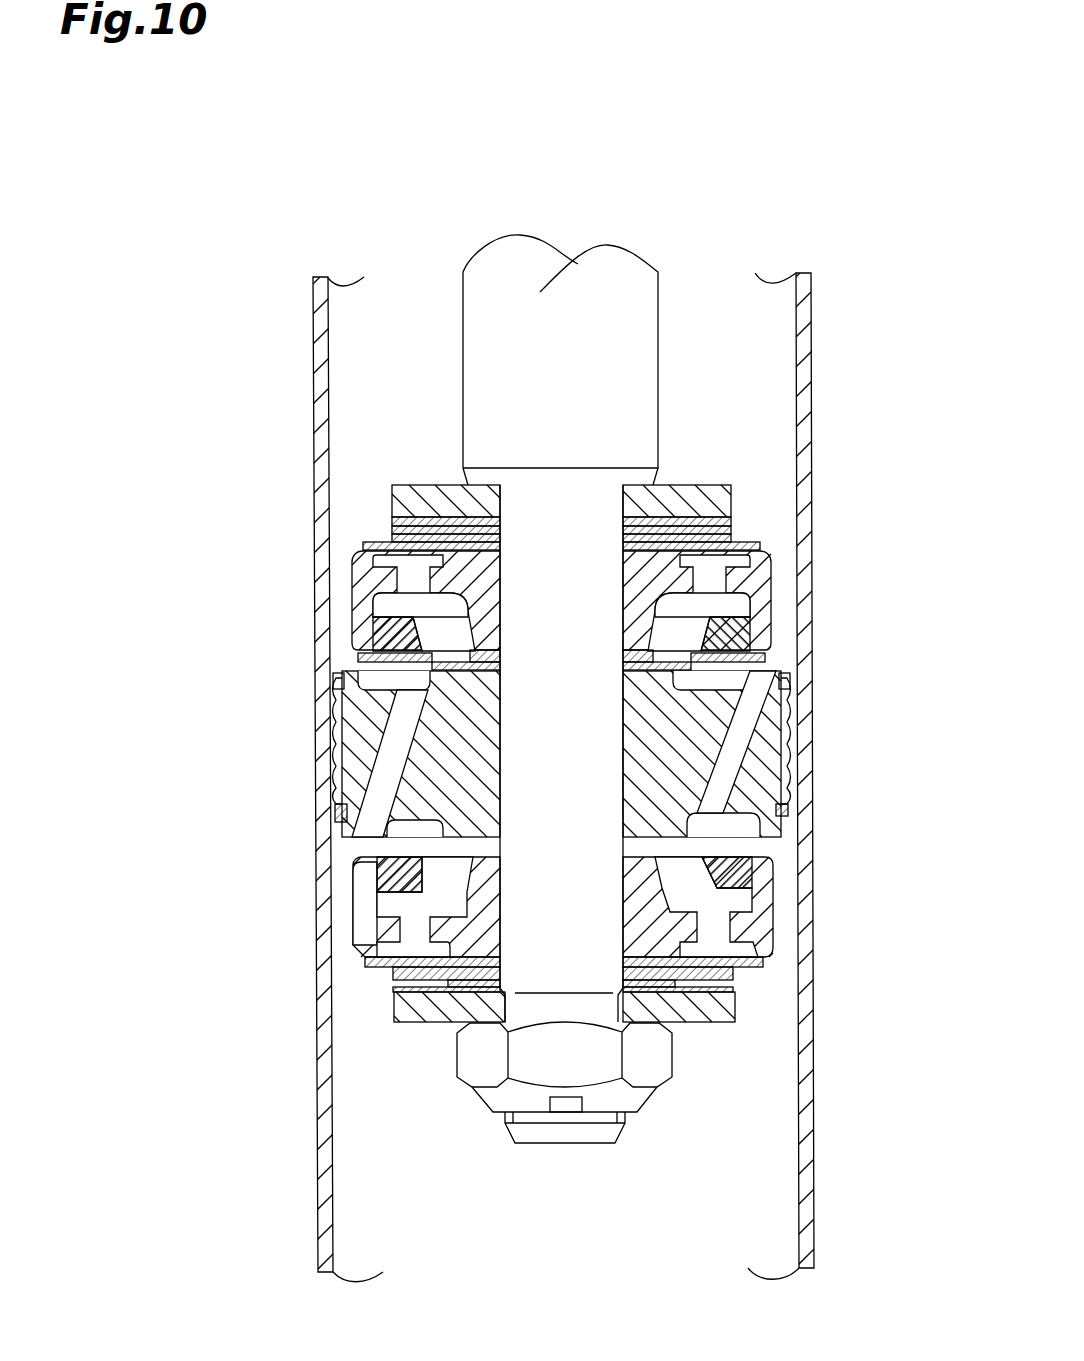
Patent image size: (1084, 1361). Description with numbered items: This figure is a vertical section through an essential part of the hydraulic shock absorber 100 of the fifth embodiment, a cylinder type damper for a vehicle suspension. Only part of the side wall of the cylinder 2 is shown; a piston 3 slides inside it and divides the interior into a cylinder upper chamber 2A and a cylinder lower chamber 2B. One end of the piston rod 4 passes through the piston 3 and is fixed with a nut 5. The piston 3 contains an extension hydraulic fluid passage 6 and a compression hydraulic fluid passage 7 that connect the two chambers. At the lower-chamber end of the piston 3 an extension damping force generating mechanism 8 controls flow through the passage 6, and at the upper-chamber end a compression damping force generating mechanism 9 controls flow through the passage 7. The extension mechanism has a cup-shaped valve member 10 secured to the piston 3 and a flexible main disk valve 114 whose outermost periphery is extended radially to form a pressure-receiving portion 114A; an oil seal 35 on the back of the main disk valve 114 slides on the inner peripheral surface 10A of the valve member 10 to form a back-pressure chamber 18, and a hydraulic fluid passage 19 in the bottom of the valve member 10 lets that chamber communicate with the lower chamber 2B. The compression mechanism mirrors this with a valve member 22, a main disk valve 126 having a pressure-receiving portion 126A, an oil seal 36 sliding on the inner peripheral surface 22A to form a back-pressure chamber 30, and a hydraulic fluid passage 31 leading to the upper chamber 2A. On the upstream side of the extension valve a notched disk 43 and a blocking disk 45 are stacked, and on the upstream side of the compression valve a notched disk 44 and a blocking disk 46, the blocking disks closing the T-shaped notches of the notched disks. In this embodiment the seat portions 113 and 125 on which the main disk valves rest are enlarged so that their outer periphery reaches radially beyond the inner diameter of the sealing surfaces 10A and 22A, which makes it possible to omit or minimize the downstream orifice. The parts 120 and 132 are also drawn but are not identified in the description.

The hydraulic shock absorber 100 is at (742, 225).
The cylinder 2 is at (803, 303).
The cylinder upper chamber 2A is at (743, 363).
The cylinder lower chamber 2B is at (775, 1187).
The piston 3 is at (557, 758).
The piston rod 4 is at (530, 348).
The nut 5 is at (517, 1098).
The extension hydraulic fluid passage 6 is at (755, 707).
The compression hydraulic fluid passage 7 is at (337, 830).
The extension damping force generating mechanism 8 is at (767, 995).
The compression damping force generating mechanism 9 is at (345, 549).
The valve member 10 is at (341, 901).
The inner peripheral surface 10A is at (413, 928).
The back-pressure chamber 18 is at (774, 908).
The hydraulic fluid passage 19 is at (363, 946).
The valve member 22 is at (568, 608).
The inner peripheral surface 22A is at (740, 602).
The back-pressure chamber 30 is at (367, 603).
The hydraulic fluid passage 31 is at (711, 577).
The oil seal 35 is at (773, 862).
The oil seal 36 is at (365, 638).
The notched disk 43 is at (640, 837).
The notched disk 44 is at (487, 667).
The blocking disk 45 is at (730, 820).
The blocking disk 46 is at (402, 690).
The seat portion 113 is at (770, 855).
The main disk valve 114 is at (750, 878).
The pressure-receiving portion 114A is at (367, 857).
The valve disc stack 120 is at (374, 962).
The seat portion 125 is at (337, 680).
The main disk valve 126 is at (357, 658).
The pressure-receiving portion 126A is at (767, 648).
The valve disc stack 132 is at (737, 545).